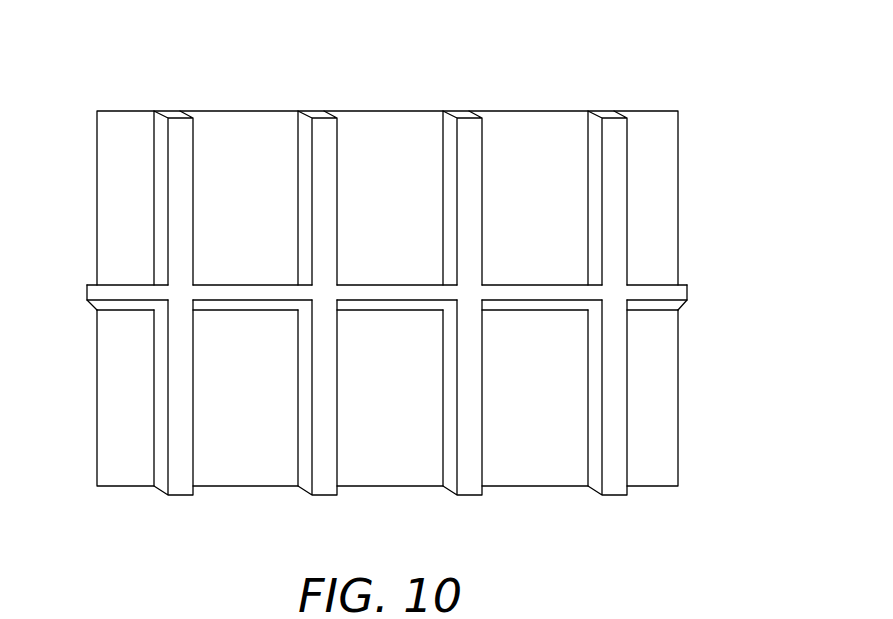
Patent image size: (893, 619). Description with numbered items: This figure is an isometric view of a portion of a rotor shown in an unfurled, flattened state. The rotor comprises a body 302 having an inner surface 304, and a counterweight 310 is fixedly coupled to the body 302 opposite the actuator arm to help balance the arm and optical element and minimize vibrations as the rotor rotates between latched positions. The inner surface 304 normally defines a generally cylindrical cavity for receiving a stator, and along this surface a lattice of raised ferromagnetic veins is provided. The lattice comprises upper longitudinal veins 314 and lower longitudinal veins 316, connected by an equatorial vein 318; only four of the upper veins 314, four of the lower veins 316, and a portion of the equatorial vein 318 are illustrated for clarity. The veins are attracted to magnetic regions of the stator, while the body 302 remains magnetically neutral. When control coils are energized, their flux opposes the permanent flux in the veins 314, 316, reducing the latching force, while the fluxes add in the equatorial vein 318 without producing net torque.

The counterweight 310 is at (747, 48).
The body 302 is at (108, 488).
The inner surface 304 is at (257, 219).
The upper longitudinal veins 314 is at (172, 111).
The lower longitudinal veins 316 is at (180, 497).
The equatorial vein 318 is at (87, 291).